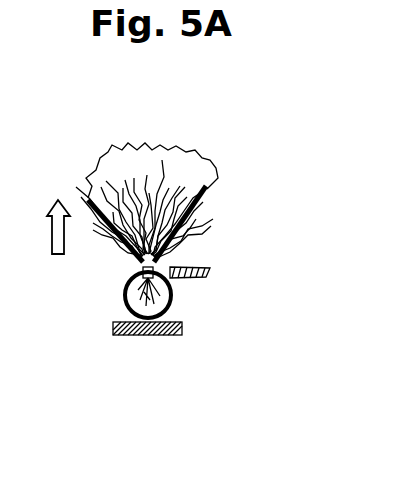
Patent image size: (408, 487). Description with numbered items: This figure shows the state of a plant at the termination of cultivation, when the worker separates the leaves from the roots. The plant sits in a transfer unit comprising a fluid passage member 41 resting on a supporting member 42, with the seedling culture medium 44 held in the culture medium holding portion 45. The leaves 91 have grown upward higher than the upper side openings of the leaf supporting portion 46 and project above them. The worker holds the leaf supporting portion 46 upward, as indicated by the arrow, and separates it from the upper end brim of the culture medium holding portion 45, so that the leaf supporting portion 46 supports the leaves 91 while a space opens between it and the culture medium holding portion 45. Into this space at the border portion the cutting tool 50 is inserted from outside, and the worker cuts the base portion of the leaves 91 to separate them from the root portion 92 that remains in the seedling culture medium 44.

The fluid passage member 41 is at (127, 300).
The supporting member 42 is at (150, 340).
The seedling culture medium 44 is at (143, 271).
The culture medium holding portion 45 is at (172, 265).
The leaf supporting portion 46 is at (200, 222).
The cutting tool 50 is at (200, 275).
The leaves 91 is at (198, 153).
The root portion 92 is at (171, 297).